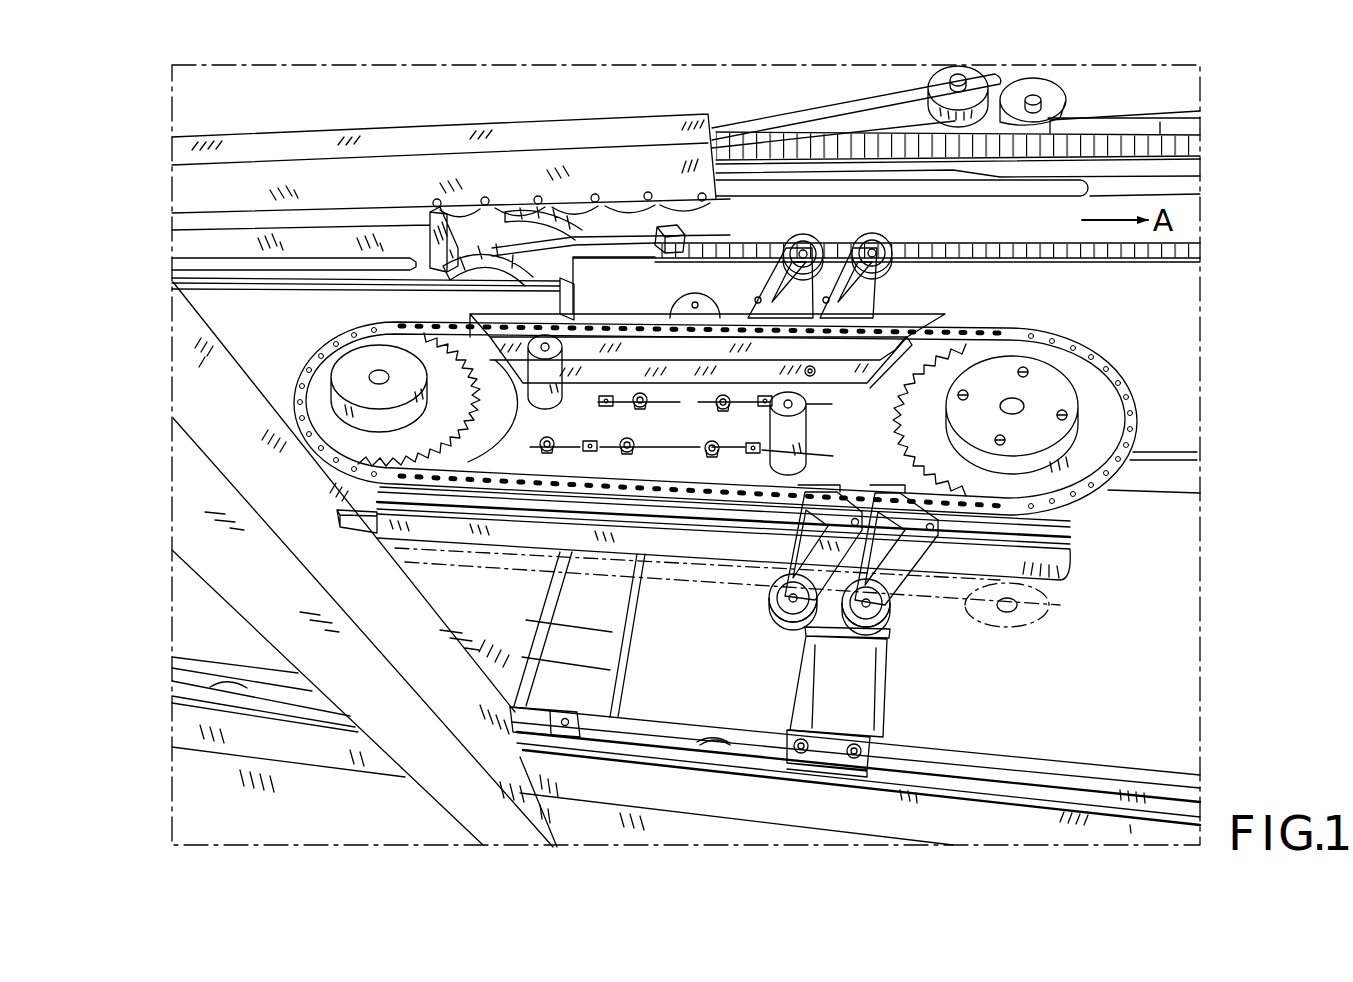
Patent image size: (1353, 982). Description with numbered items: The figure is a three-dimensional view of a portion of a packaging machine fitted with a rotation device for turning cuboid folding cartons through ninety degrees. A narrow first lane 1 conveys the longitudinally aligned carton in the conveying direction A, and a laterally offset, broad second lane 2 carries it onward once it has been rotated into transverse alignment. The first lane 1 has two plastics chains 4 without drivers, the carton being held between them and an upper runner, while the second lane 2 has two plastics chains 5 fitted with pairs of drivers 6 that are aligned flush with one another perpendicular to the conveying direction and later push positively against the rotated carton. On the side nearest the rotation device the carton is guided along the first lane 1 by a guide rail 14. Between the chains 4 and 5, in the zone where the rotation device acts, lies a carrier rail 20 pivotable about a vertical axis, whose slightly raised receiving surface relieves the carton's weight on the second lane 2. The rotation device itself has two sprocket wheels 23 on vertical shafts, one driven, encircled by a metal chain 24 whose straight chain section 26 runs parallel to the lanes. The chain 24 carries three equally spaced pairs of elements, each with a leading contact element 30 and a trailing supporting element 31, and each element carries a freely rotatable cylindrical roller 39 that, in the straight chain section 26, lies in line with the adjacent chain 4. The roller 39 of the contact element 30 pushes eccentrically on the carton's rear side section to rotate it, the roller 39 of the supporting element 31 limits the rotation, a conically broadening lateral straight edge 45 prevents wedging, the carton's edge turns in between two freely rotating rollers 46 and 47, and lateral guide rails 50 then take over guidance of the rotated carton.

The first lane 1 is at (575, 206).
The second lane 2 is at (1218, 203).
The plastics chains 4 is at (520, 212).
The plastics chains 5 is at (1172, 146).
The drivers 6 is at (662, 250).
The guide rail 14 is at (233, 240).
The carrier rail 20 is at (1058, 188).
The sprocket wheels 23 is at (315, 428).
The metal chain 24 is at (1128, 390).
The straight chain section 26 is at (980, 318).
The contact element 30 is at (889, 297).
The supporting element 31 is at (758, 270).
The cylindrical roller 39 is at (889, 263).
The lateral straight edge 45 is at (920, 116).
The roller 46 is at (968, 82).
The roller 47 is at (1050, 98).
The lateral guide rails 50 is at (1158, 112).